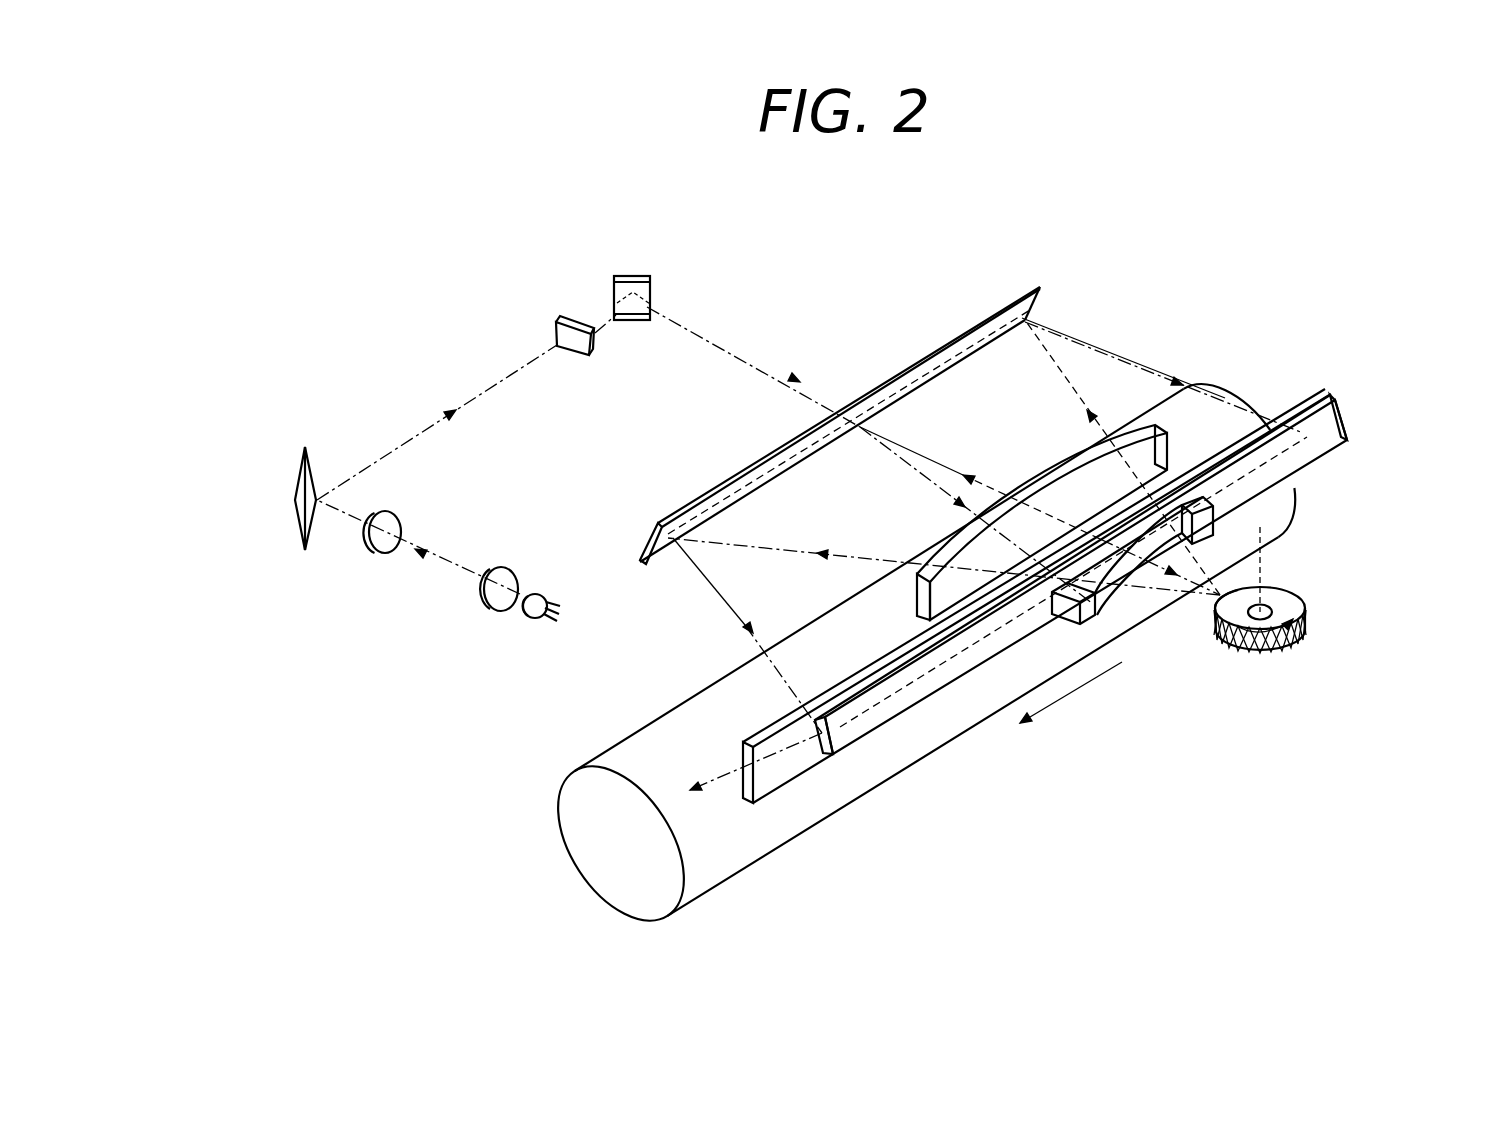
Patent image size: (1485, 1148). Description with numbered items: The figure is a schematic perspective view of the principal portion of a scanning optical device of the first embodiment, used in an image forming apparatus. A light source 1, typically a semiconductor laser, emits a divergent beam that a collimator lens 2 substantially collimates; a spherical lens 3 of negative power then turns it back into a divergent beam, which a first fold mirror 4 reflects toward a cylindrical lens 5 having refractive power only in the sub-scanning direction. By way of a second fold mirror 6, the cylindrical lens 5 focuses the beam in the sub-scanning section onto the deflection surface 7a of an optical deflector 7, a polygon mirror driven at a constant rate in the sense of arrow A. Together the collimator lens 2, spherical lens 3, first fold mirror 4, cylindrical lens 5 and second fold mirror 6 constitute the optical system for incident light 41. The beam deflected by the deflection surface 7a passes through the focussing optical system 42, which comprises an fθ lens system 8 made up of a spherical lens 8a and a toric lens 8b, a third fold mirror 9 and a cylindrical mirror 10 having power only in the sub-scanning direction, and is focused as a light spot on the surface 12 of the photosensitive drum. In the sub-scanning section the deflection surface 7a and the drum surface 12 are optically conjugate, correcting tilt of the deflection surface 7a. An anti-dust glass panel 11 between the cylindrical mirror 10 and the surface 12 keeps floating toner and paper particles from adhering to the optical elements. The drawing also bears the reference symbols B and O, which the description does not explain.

The light source 1 is at (535, 620).
The collimator lens 2 is at (500, 612).
The spherical lens 3 is at (381, 553).
The first fold mirror 4 is at (292, 511).
The cylindrical lens 5 is at (567, 315).
The second fold mirror 6 is at (640, 276).
The optical deflector 7 is at (1302, 597).
The deflection surface 7a is at (1213, 608).
The fθ lens system 8 is at (1103, 807).
The spherical lens 8a is at (1075, 615).
The toric lens 8b is at (938, 602).
The third fold mirror 9 is at (668, 521).
The cylindrical mirror 10 is at (867, 730).
The anti-dust glass panel 11 is at (787, 775).
The surface of photosensitive drum 12 is at (628, 750).
The optical system for incident light 41 is at (232, 442).
The focussing optical system 42 is at (1037, 238).
The arrow A is at (1263, 630).
The scanning direction B is at (1073, 690).
The rotation axis O is at (1263, 548).